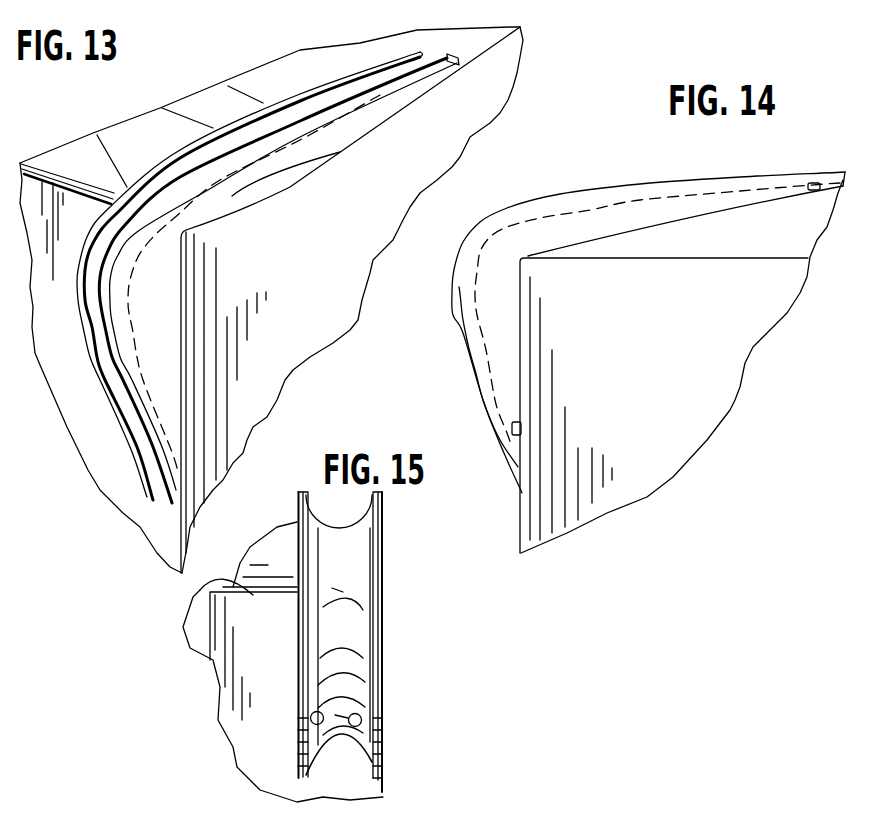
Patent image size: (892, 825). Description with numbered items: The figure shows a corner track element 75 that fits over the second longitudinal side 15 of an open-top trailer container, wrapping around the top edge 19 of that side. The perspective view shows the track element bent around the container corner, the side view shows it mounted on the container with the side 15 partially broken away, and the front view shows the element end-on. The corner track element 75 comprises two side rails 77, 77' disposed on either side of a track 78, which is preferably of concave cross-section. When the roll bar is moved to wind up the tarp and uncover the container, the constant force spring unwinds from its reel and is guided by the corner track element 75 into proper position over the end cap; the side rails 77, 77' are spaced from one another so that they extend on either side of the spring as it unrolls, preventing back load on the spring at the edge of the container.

In FIG. 13, the second longitudinal side 15 is at (72, 377).
In FIG. 13, the top edge 19 is at (60, 185).
In FIG. 14, the top edge 19 is at (573, 262).
In FIG. 15, the top edge 19 is at (277, 662).
In FIG. 13, the corner track element 75 is at (303, 264).
In FIG. 14, the corner track element 75 is at (648, 311).
In FIG. 15, the corner track element 75 is at (307, 642).
In FIG. 13, the side rail 77 is at (314, 278).
In FIG. 14, the side rail 77 is at (685, 192).
In FIG. 15, the side rail 77 is at (406, 642).
In FIG. 13, the side rail 77' is at (250, 263).
In FIG. 15, the side rail 77' is at (244, 635).
In FIG. 15, the track 78 is at (330, 628).